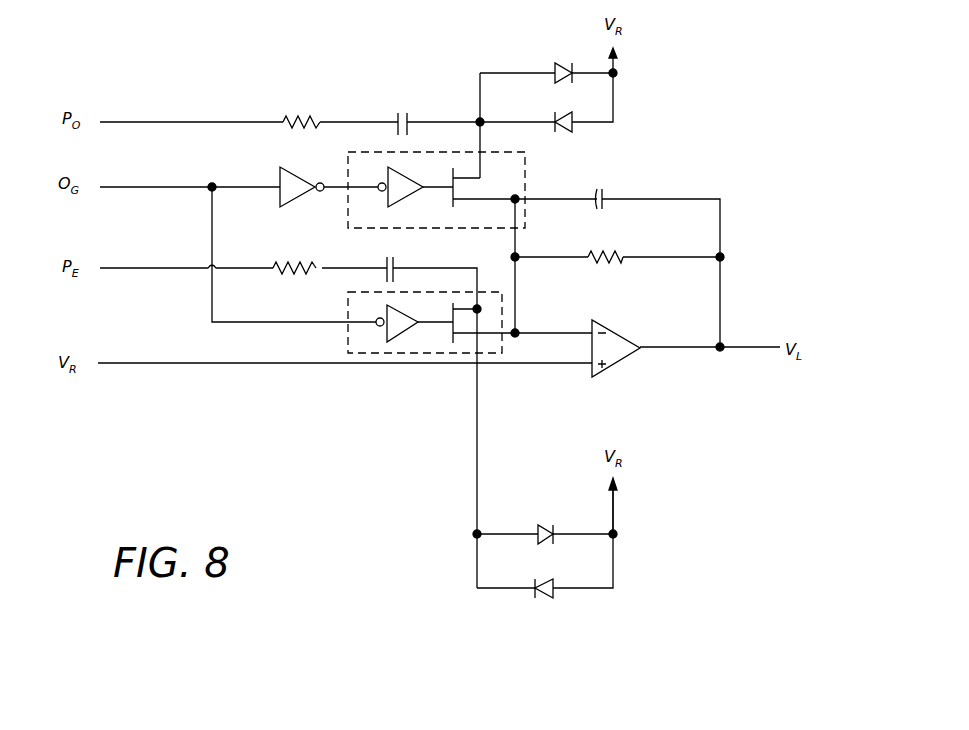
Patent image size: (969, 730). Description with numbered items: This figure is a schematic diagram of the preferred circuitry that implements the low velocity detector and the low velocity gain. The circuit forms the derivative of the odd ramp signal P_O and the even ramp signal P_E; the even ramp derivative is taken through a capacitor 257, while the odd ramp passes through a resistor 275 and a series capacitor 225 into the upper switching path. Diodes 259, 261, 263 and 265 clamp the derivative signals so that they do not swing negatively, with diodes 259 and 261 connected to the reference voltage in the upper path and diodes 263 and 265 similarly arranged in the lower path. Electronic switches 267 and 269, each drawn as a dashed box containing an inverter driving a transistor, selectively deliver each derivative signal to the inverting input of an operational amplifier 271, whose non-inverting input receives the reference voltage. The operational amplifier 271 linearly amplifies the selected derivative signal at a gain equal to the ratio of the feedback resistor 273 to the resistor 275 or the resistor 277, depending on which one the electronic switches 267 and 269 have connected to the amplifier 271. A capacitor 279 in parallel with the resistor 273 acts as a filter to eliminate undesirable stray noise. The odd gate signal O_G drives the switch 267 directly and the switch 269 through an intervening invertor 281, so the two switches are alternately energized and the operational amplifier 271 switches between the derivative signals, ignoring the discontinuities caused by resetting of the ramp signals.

The 2200 pf capacitor 225 is at (407, 127).
The capacitor 257 is at (387, 262).
The diode 259 is at (563, 65).
The diode 261 is at (566, 131).
The diode 263 is at (551, 504).
The diode 265 is at (545, 598).
The electronic switch 267 is at (348, 160).
The electronic switch 269 is at (348, 350).
The operational amplifier 271 is at (605, 370).
The resistor 273 is at (597, 263).
The resistor 275 is at (283, 122).
The resistor 277 is at (300, 271).
The capacitor 279 is at (603, 203).
The invertor 281 is at (280, 175).